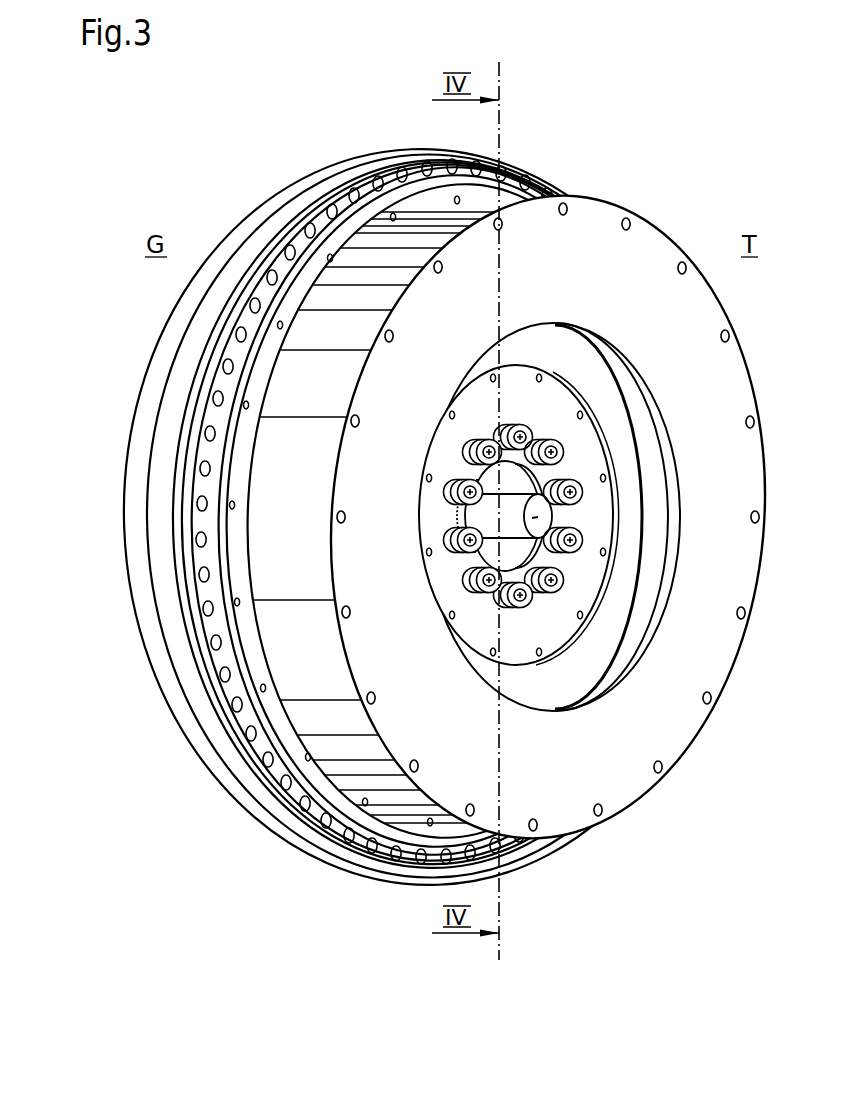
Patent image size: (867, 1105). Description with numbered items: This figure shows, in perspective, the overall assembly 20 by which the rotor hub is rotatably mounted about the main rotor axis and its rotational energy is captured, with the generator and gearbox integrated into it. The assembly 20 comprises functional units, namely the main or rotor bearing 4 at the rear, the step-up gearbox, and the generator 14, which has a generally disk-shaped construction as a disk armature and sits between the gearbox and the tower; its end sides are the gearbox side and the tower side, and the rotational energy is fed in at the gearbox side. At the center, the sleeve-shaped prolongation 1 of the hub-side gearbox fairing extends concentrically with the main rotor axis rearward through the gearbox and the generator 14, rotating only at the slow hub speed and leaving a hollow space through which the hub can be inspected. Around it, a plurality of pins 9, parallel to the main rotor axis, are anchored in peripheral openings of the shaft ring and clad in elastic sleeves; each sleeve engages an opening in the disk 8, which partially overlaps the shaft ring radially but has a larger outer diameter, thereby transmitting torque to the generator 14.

The sleeve-shaped prolongation 1 is at (537, 517).
The rotor bearing 4 is at (183, 360).
The disk 8 is at (568, 597).
The pins 9 is at (583, 492).
The generator 14 is at (223, 862).
The assembly 20 is at (603, 163).